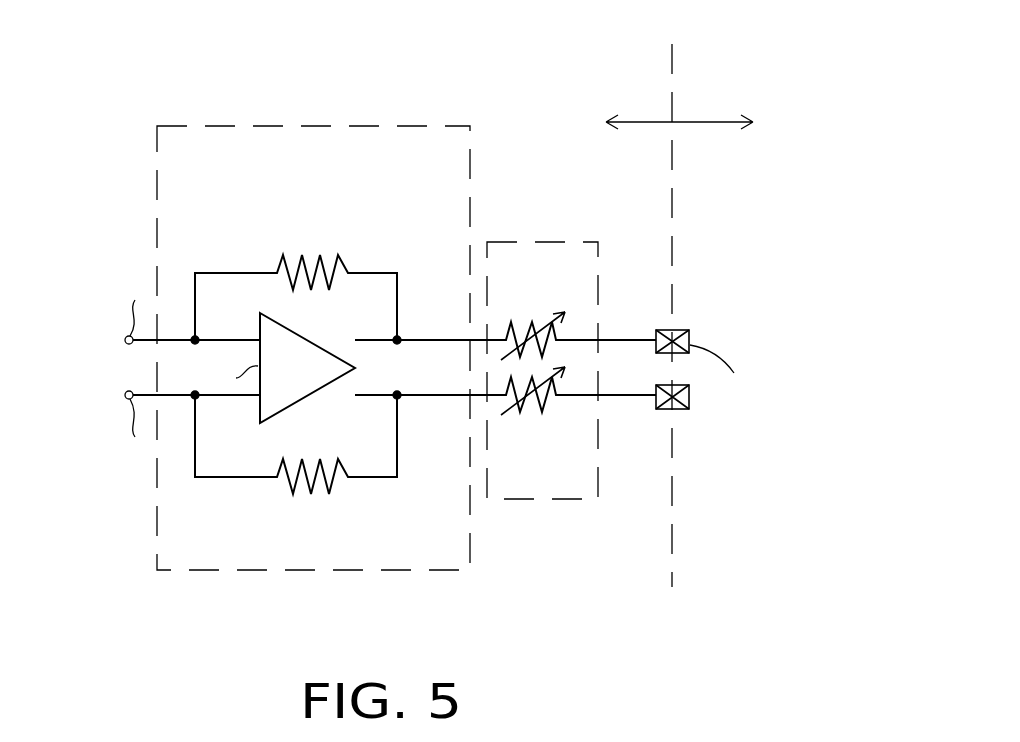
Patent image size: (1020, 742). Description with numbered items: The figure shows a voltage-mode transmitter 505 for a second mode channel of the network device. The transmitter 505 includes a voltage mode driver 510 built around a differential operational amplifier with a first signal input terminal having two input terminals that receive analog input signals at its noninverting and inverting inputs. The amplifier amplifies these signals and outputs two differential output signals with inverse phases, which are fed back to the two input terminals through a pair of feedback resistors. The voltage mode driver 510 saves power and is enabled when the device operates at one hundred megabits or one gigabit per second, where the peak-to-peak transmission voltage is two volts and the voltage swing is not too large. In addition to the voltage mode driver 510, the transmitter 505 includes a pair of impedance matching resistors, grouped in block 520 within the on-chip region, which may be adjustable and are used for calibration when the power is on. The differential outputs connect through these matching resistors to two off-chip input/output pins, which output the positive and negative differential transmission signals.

The transmitter 505 is at (131, 61).
The voltage mode driver 510 is at (216, 126).
The matching resistor block 520 is at (523, 242).